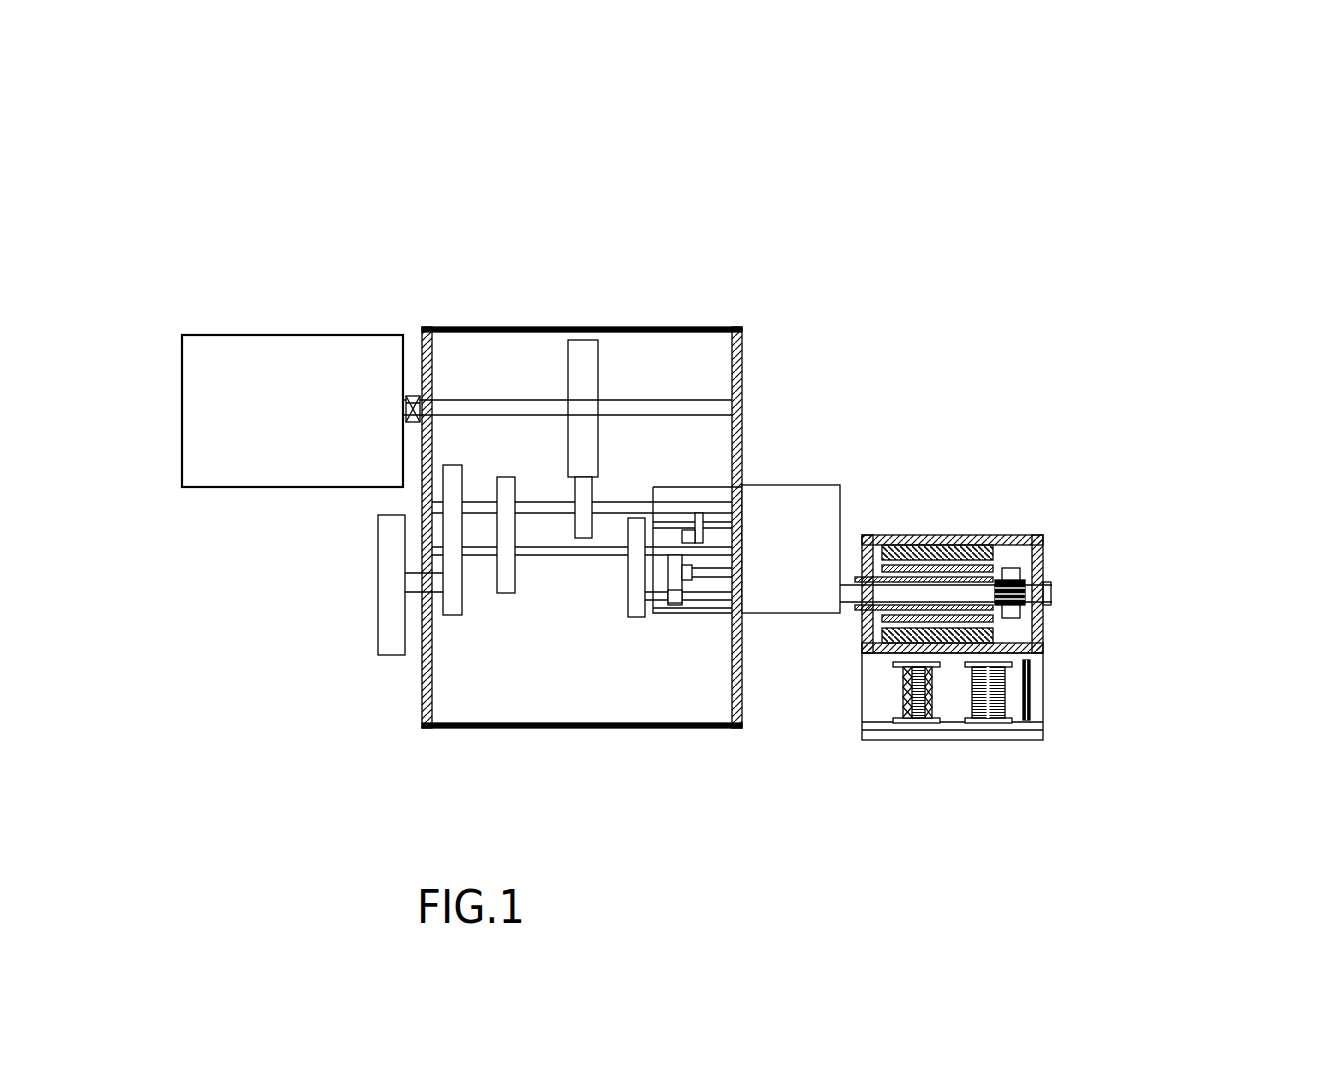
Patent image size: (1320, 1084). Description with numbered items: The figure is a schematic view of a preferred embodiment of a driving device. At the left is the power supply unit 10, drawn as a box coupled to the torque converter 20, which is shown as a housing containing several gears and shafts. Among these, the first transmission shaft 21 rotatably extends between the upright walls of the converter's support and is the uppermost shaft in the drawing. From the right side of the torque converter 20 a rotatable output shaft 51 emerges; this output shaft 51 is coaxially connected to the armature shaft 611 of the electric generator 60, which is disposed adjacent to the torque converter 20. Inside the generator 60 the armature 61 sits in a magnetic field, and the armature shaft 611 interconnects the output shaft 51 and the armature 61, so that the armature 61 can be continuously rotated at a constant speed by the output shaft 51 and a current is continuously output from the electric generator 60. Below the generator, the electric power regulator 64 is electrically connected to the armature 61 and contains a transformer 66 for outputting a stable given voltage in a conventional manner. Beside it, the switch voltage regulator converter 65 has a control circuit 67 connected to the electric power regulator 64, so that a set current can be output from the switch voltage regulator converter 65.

The power supply unit 10 is at (281, 323).
The torque converter 20 is at (658, 305).
The first transmission shaft 21 is at (476, 400).
The output shaft 51 is at (853, 598).
The electric generator 60 is at (1004, 588).
The armature 61 is at (993, 558).
The armature shaft 611 is at (948, 562).
The electric power regulator 64 is at (900, 695).
The switch voltage regulator converter 65 is at (995, 720).
The transformer 66 is at (922, 718).
The control circuit 67 is at (1030, 693).